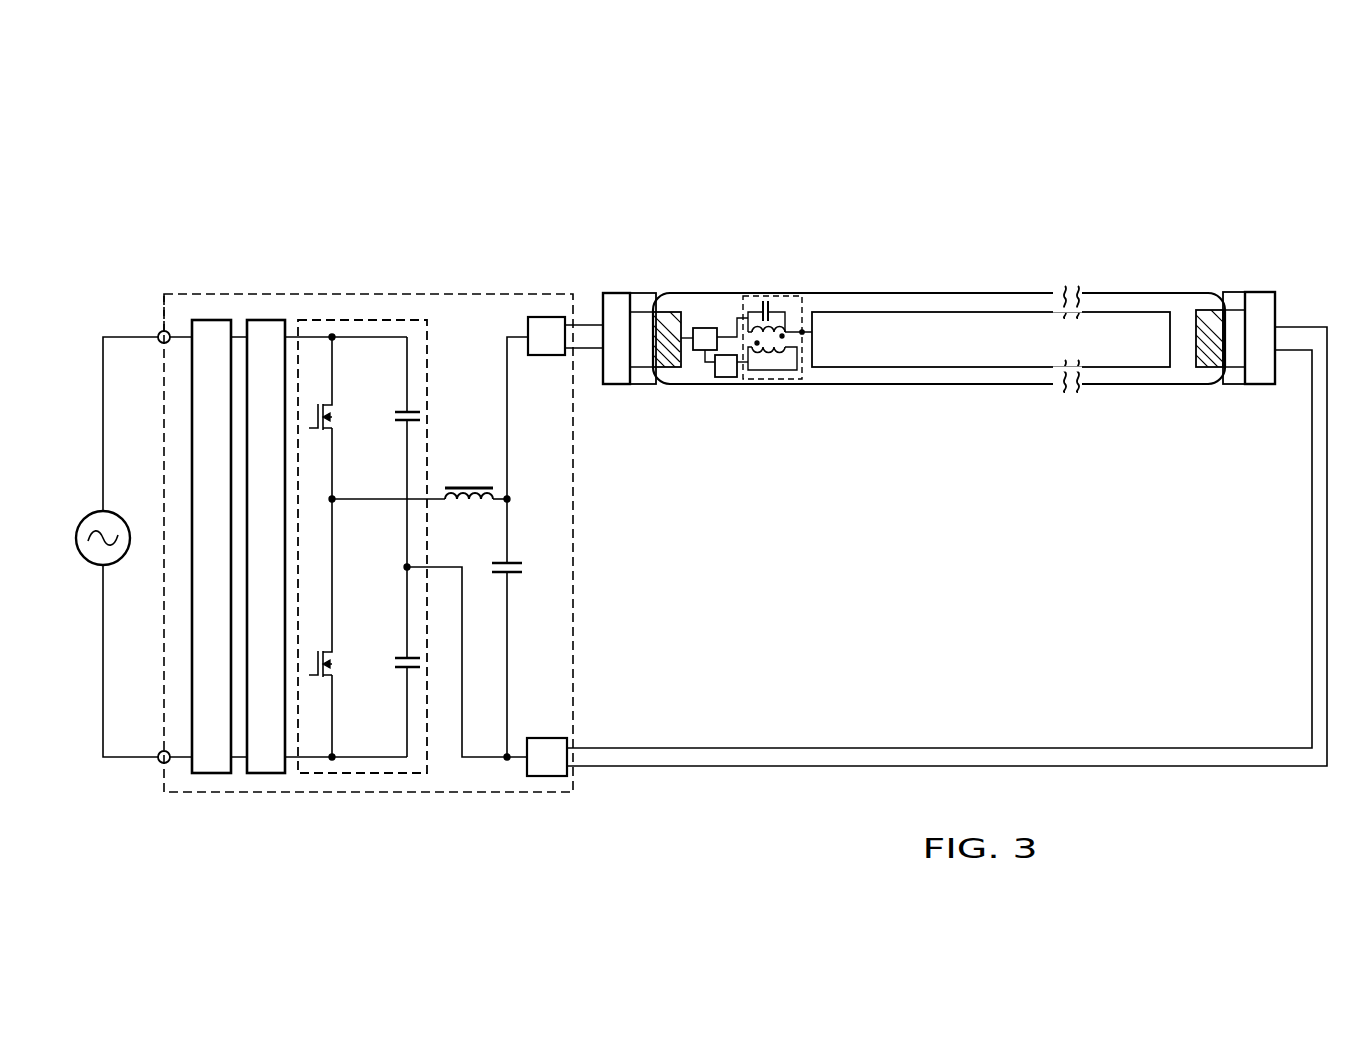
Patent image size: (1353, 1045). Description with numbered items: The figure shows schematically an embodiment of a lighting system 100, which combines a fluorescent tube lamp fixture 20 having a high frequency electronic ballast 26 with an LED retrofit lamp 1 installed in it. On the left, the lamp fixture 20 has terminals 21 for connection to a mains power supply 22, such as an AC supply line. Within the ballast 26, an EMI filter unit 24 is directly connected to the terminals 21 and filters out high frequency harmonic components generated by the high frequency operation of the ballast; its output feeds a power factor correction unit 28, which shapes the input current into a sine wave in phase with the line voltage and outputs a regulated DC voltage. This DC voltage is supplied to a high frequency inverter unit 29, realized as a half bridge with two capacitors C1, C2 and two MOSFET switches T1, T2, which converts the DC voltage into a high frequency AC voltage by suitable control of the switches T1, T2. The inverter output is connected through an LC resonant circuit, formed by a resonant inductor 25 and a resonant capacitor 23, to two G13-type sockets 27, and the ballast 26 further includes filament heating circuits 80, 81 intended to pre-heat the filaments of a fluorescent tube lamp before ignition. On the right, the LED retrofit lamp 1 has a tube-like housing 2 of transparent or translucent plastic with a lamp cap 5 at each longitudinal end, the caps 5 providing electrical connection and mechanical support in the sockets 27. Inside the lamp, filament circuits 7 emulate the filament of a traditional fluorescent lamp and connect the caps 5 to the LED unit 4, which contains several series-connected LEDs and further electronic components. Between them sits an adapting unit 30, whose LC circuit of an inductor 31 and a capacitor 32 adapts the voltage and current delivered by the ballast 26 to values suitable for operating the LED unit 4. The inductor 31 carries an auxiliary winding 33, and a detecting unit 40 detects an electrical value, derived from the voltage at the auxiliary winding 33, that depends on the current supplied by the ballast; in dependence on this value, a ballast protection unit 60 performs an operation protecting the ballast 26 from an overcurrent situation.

The lighting system 100 is at (1106, 160).
The LED retrofit lamp 1 is at (1097, 272).
The tube-like housing 2 is at (1020, 385).
The LED unit 4 is at (955, 292).
The lamp cap 5 is at (643, 293).
The filament circuit 7 is at (668, 368).
The lamp fixture 20 is at (427, 277).
The terminals 21 is at (158, 337).
The mains power supply 22 is at (112, 562).
The resonant capacitor 23 is at (518, 573).
The EMI filter unit 24 is at (213, 320).
The resonant inductor 25 is at (473, 488).
The high frequency electronic ballast 26 is at (163, 297).
The socket 27 is at (612, 293).
The power factor correction unit 28 is at (268, 320).
The high frequency inverter unit 29 is at (362, 320).
The adapting unit 30 is at (802, 297).
The inductor 31 is at (776, 330).
The capacitor 32 is at (760, 302).
The auxiliary winding 33 is at (775, 352).
The detecting unit 40 is at (727, 378).
The ballast protection unit 60 is at (705, 328).
The filament heating circuit 80 is at (548, 317).
The filament heating circuit 81 is at (547, 776).
The switch T1 is at (337, 418).
The switch T2 is at (337, 628).
The capacitor C1 is at (396, 452).
The capacitor C2 is at (396, 662).